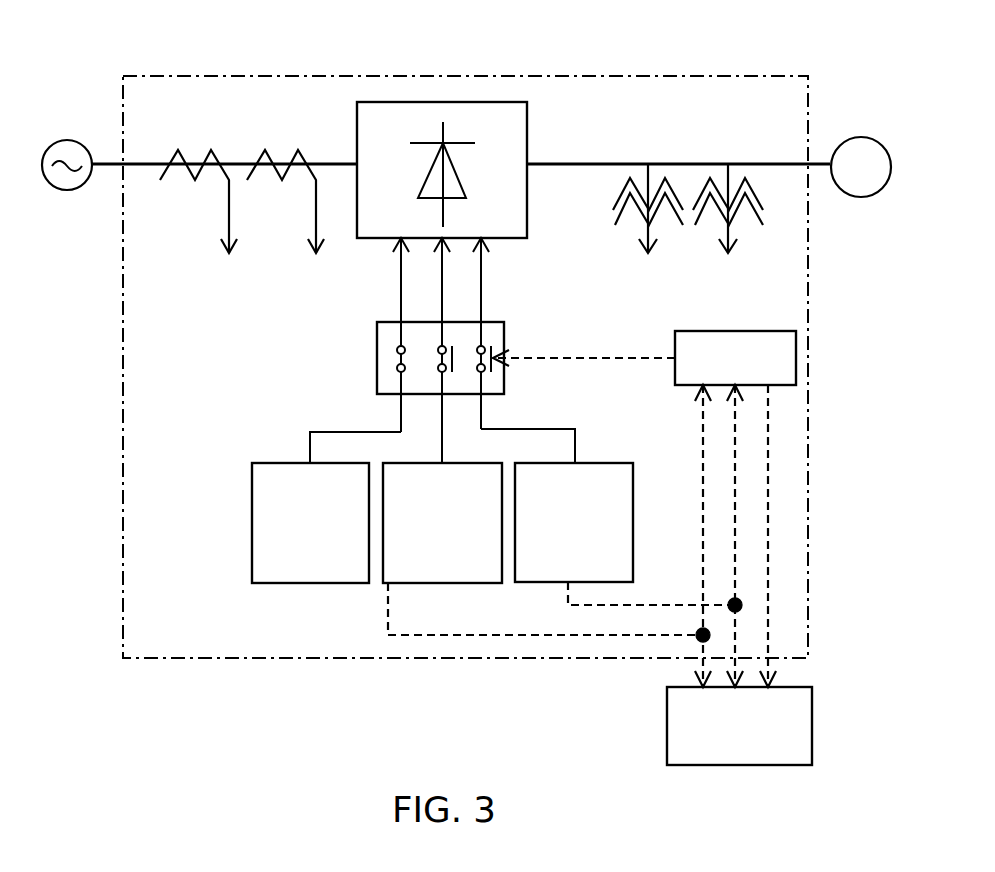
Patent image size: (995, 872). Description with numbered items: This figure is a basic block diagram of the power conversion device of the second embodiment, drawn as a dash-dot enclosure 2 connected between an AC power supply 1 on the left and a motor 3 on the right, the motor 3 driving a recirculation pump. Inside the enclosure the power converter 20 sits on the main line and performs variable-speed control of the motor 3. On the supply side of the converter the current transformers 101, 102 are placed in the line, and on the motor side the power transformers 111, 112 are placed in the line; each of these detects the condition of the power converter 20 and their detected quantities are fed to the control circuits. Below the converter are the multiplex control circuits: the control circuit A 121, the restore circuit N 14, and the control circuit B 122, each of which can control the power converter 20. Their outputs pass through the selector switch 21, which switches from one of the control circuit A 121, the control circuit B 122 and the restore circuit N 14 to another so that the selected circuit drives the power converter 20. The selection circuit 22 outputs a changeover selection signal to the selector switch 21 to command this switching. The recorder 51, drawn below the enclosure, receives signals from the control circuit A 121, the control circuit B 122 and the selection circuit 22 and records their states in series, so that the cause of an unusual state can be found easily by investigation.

The AC power supply 1 is at (70, 140).
The power converter apparatus 2 is at (683, 77).
The motor 3 is at (857, 137).
The power converter 20 is at (503, 102).
The selector switch 21 is at (495, 340).
The selection circuit 22 is at (675, 382).
The recorder 51 is at (667, 732).
The restore circuit N 14 is at (453, 583).
The current transformer 101 is at (182, 153).
The current transformer 102 is at (273, 153).
The power transformer 111 is at (622, 192).
The power transformer 112 is at (757, 195).
The control circuit A 121 is at (318, 583).
The control circuit B 122 is at (545, 583).